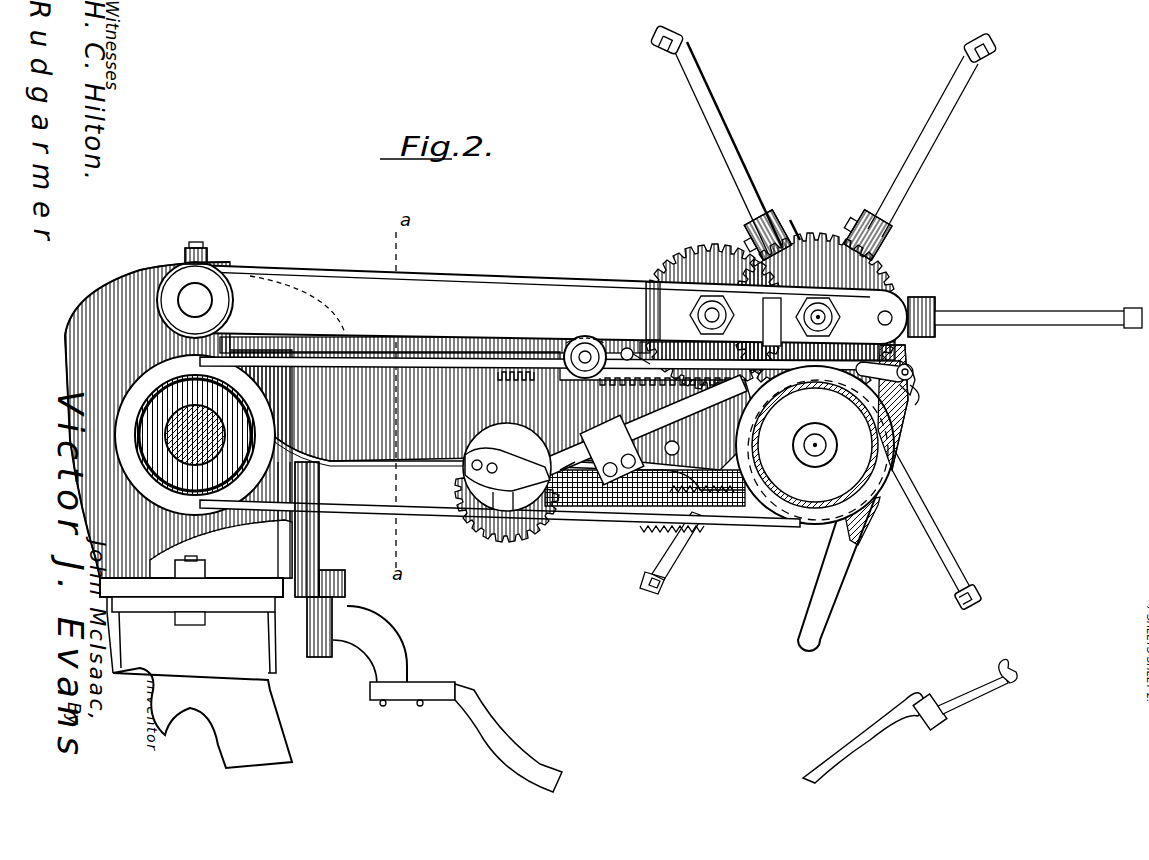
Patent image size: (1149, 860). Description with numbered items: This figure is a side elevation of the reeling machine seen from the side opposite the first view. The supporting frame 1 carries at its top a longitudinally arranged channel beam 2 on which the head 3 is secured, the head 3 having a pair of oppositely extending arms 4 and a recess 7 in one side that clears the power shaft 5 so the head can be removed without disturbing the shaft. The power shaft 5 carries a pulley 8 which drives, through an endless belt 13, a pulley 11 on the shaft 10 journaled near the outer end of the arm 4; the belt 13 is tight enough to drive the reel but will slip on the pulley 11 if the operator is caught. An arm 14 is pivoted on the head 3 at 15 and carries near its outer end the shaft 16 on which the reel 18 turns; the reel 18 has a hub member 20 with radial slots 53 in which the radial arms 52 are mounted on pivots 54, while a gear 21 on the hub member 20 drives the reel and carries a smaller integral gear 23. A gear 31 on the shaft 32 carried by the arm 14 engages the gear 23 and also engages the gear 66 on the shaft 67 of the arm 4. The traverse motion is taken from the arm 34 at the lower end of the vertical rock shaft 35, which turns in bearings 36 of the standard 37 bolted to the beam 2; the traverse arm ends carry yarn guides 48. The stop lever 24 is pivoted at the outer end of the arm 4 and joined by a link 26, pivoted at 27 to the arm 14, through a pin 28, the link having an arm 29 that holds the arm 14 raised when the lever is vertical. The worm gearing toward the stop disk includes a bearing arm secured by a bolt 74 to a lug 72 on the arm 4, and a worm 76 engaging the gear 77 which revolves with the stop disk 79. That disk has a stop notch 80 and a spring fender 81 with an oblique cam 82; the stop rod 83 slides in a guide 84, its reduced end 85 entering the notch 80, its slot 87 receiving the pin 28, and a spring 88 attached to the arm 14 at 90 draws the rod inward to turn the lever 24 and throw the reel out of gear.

The supporting frame 1 is at (224, 722).
The channel beam 2 is at (268, 628).
The head 3 is at (178, 420).
The arm 4 is at (66, 368).
The power shaft 5 is at (222, 425).
The recess 7 is at (276, 519).
The pulley 8 is at (169, 435).
The shaft 10 is at (813, 450).
The pulley 11 is at (837, 458).
The endless belt 13 is at (448, 372).
The arm 14 is at (410, 277).
The pivot 15 is at (204, 295).
The shaft 16 is at (818, 320).
The reel 18 is at (743, 139).
The hub member 20 is at (772, 228).
The gear 21 is at (896, 288).
The gear 23 is at (803, 232).
The stop lever 24 is at (832, 612).
The link 26 is at (906, 357).
The pivot 27 is at (938, 318).
The pin 28 is at (916, 378).
The arm 29 is at (916, 392).
The gear 31 is at (690, 262).
The shaft 32 is at (703, 305).
The arm 34 is at (385, 650).
The rock shaft 35 is at (320, 540).
The bearings 36 is at (337, 580).
The standard 37 is at (300, 552).
The guides 48 is at (1020, 680).
The radial arms 52 is at (935, 134).
The radial slot 53 is at (884, 247).
The pivots 54 is at (858, 222).
The gear 66 is at (733, 510).
The shaft 67 is at (653, 505).
The lug 72 is at (570, 342).
The bolt 74 is at (587, 356).
The worm 76 is at (510, 374).
The gear 77 is at (476, 532).
The stop disk 79 is at (510, 538).
The stop notch 80 is at (523, 509).
The spring fender 81 is at (492, 552).
The cam 82 is at (546, 482).
The stop rod 83 is at (580, 440).
The guide 84 is at (612, 449).
The reduced end 85 is at (548, 452).
The slot 87 is at (914, 372).
The spring 88 is at (628, 348).
The spring attachment 90 is at (645, 425).